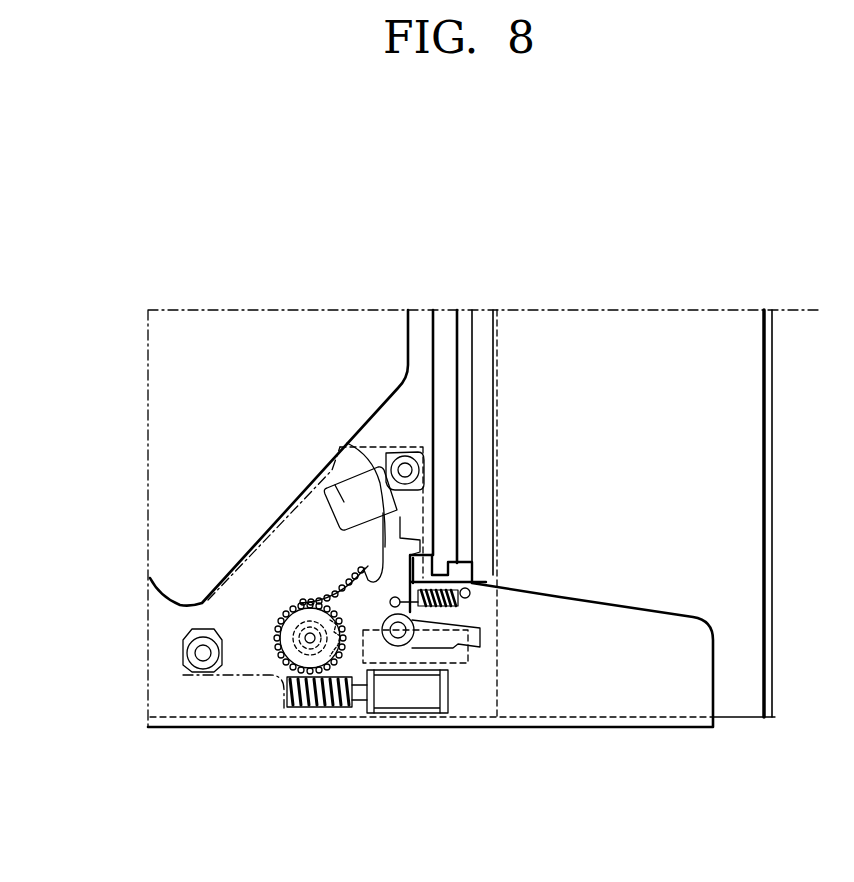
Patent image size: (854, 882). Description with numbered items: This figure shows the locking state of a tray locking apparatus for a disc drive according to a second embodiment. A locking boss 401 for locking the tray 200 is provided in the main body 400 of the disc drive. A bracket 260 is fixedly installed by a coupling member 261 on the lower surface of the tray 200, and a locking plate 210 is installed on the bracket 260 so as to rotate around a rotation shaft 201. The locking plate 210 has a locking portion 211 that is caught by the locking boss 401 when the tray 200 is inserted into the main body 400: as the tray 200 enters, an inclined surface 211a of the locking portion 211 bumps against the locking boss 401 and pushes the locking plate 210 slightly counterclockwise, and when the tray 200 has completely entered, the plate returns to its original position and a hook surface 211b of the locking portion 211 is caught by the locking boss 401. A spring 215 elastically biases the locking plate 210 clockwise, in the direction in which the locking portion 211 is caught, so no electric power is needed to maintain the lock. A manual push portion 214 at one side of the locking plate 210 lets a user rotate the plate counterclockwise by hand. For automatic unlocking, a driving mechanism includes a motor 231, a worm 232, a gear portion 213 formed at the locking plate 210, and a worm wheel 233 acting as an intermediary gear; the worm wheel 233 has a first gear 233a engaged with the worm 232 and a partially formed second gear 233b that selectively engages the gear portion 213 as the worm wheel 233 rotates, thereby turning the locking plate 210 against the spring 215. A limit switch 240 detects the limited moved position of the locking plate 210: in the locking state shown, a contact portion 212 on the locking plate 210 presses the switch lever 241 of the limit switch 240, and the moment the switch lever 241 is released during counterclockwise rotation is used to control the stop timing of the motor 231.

The tray 200 is at (600, 700).
The main body 400 is at (738, 700).
The rotation shaft 201 is at (398, 647).
The locking plate 210 is at (343, 577).
The locking portion 211 is at (343, 520).
The inclined surface 211a is at (412, 558).
The hook surface 211b is at (462, 563).
The contact portion 212 is at (418, 545).
The gear portion 213 is at (338, 592).
The manual push portion 214 is at (462, 650).
The spring 215 is at (468, 592).
The motor 231 is at (425, 706).
The worm 232 is at (307, 708).
The worm wheel 233 is at (86, 600).
The first gear 233a is at (280, 620).
The second gear 233b is at (288, 636).
The limit switch 240 is at (343, 503).
The switch lever 241 is at (365, 445).
The bracket 260 is at (397, 447).
The coupling member 261 is at (420, 462).
The locking boss 401 is at (470, 586).